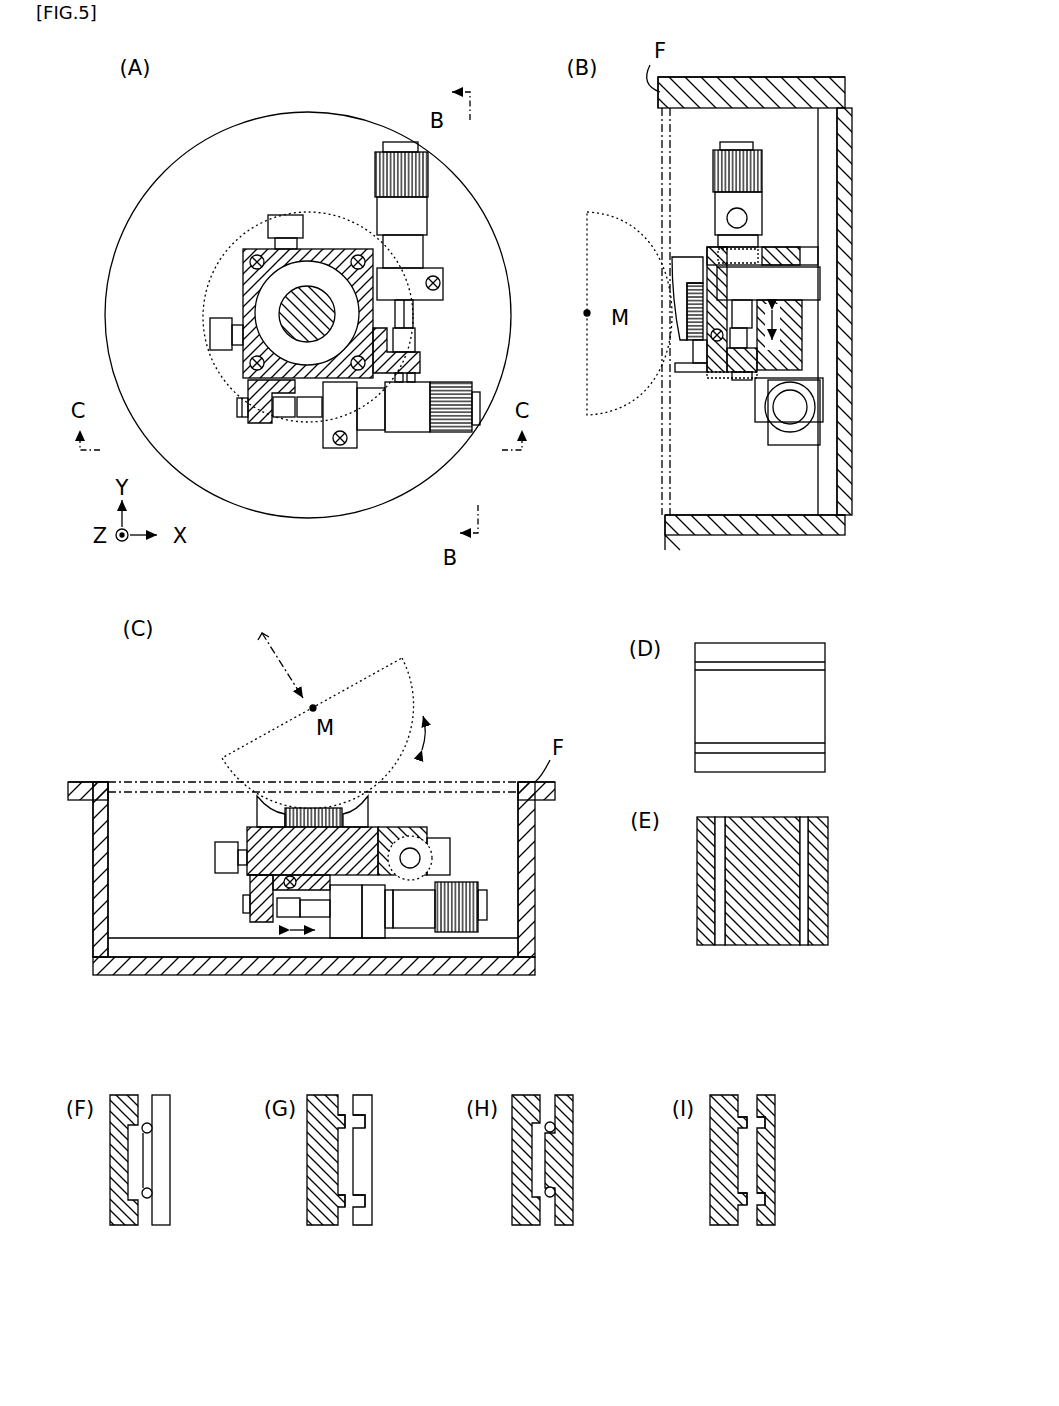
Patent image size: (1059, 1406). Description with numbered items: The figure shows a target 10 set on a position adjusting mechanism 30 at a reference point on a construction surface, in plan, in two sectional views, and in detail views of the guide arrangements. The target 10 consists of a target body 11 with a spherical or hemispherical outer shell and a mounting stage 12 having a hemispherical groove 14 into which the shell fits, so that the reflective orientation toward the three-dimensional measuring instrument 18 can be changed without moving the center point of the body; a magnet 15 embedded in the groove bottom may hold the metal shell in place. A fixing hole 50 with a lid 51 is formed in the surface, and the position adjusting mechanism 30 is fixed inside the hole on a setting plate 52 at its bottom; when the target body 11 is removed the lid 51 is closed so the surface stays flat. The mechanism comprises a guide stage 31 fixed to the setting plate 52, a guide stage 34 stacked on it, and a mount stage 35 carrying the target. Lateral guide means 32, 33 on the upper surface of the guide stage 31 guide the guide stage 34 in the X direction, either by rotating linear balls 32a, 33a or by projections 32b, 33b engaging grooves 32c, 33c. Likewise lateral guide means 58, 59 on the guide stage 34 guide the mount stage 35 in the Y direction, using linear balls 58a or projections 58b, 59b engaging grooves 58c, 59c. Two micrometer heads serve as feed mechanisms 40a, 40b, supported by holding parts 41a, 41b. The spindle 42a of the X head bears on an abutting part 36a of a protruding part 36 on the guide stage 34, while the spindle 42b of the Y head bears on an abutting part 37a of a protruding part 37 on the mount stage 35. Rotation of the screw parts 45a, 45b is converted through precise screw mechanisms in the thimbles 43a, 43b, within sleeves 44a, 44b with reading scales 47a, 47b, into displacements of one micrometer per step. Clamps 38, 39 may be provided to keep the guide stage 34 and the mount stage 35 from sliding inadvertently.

The target 10 is at (290, 214).
The target body 11 is at (337, 215).
The mounting stage 12 is at (263, 292).
The hemispherical groove 14 is at (662, 258).
The magnet 15 is at (288, 312).
The 3D measuring instrument 18 is at (273, 649).
The position adjusting mechanism 30 is at (373, 440).
The guide stage 31 is at (810, 255).
The lateral guide means 32 is at (825, 661).
The linear ball 32a is at (152, 1128).
The projection 32b is at (347, 1118).
The groove 32c is at (365, 1125).
The lateral guide means 33 is at (825, 750).
The linear ball 33a is at (152, 1193).
The projection 33b is at (347, 1196).
The groove 33c is at (365, 1205).
The guide stage 34 is at (782, 250).
The mount stage 35 is at (243, 276).
The protruding part 36 is at (248, 386).
The abutting part 36a is at (282, 418).
The protruding part 37 is at (421, 362).
The abutting part 37a is at (416, 341).
The clamp 38 is at (268, 225).
The clamp 39 is at (210, 333).
The feed mechanism 40a is at (414, 438).
The feed mechanism 40b is at (440, 209).
The holding part 41a is at (343, 449).
The holding part 41b is at (445, 276).
The spindle 42a is at (312, 418).
The spindle 42b is at (413, 312).
The thimble 43a is at (420, 926).
The thimble 43b is at (757, 203).
The sleeve 44a is at (372, 935).
The sleeve 44b is at (745, 262).
The screw part 45a is at (470, 933).
The screw part 45b is at (763, 167).
The reading scale 47a is at (393, 926).
The reading scale 47b is at (760, 240).
The fixing hole 50 is at (700, 492).
The lid 51 is at (665, 485).
The setting plate 52 is at (268, 506).
The lateral guide means 58 is at (720, 946).
The linear ball 58a is at (555, 1127).
The projection 58b is at (555, 1192).
The groove 58c is at (765, 1125).
The lateral guide means 59 is at (805, 946).
The projection 59b is at (749, 1196).
The groove 59c is at (765, 1205).